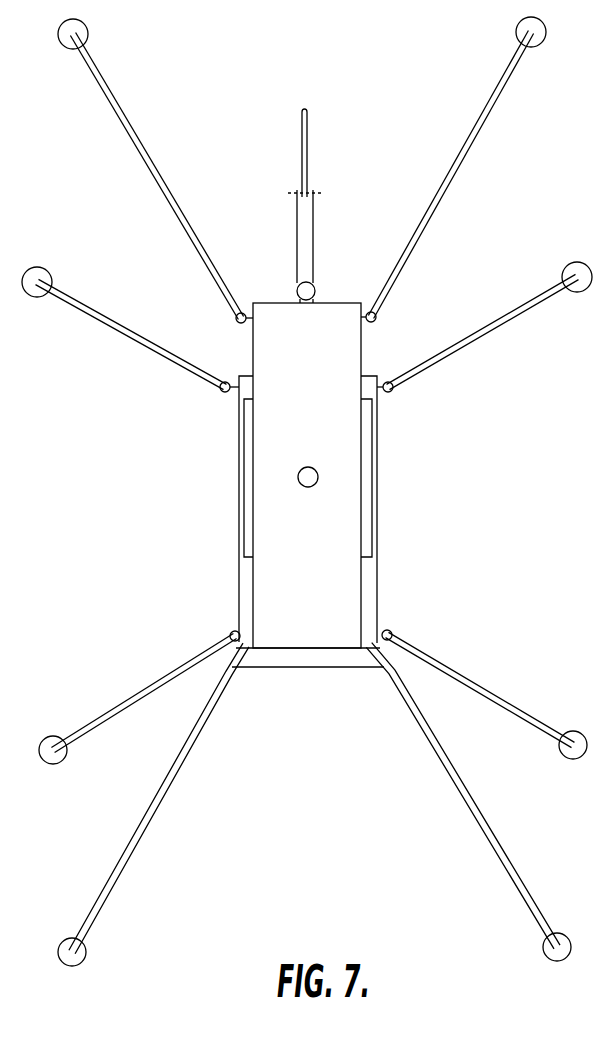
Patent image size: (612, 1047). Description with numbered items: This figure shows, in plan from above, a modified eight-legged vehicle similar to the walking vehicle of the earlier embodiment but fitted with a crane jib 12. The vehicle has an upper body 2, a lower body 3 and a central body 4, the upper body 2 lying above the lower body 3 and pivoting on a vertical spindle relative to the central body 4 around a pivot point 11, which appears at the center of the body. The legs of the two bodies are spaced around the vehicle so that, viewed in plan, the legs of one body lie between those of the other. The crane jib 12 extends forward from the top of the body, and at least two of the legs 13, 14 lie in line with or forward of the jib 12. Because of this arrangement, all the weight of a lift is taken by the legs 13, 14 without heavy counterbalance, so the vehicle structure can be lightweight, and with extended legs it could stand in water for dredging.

The upper body 2 is at (364, 339).
The lower body 3 is at (382, 593).
The central body 4 is at (370, 478).
The pivot point 11 is at (308, 487).
The crane jib 12 is at (315, 135).
The leg 13 is at (495, 107).
The leg 14 is at (132, 127).